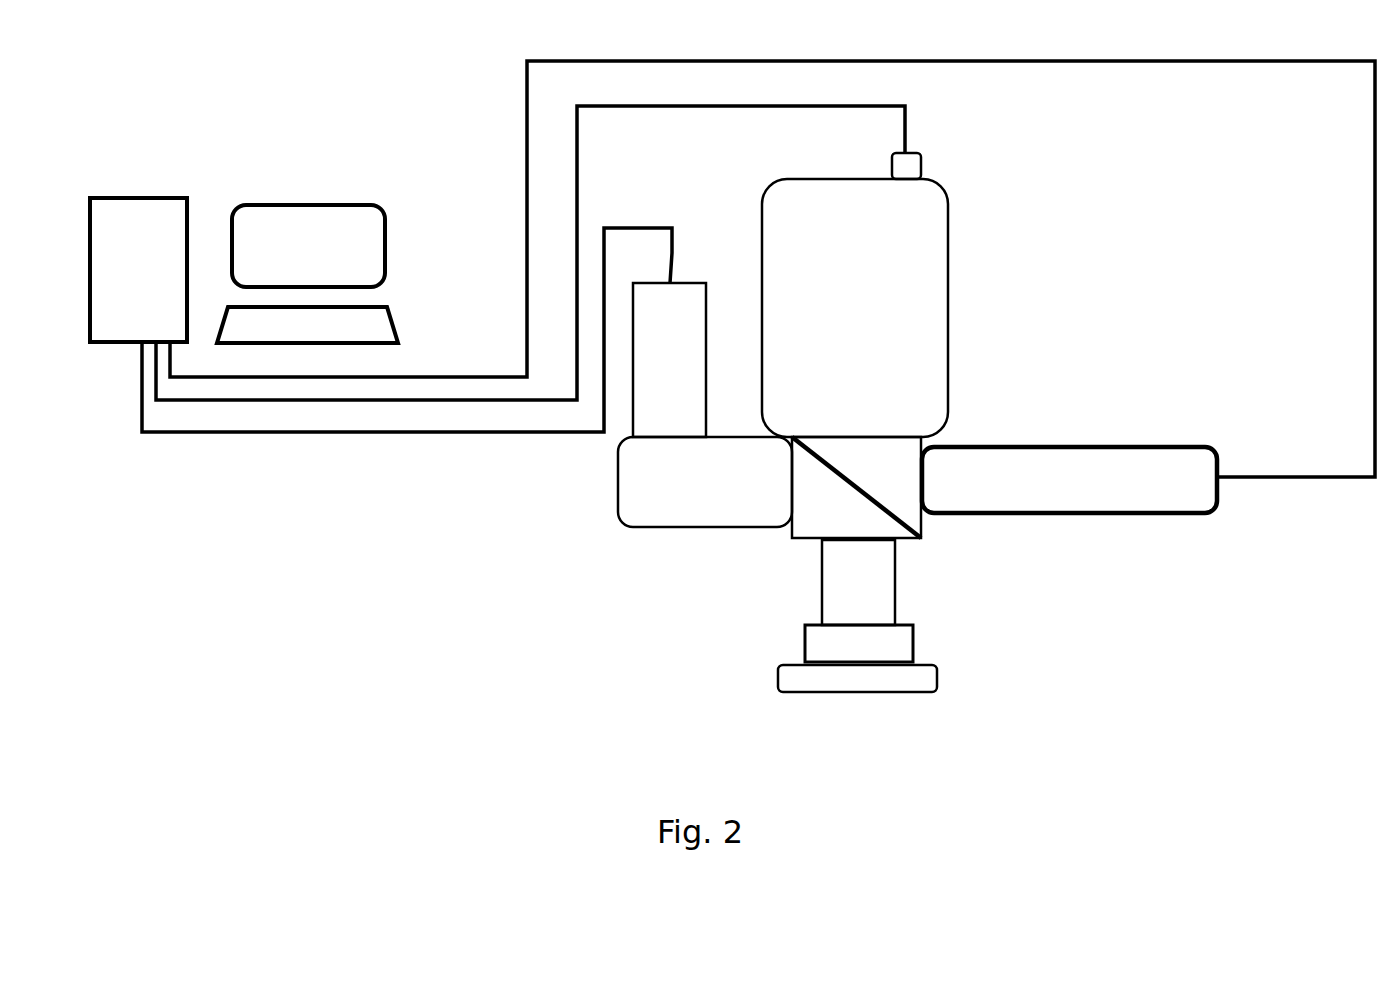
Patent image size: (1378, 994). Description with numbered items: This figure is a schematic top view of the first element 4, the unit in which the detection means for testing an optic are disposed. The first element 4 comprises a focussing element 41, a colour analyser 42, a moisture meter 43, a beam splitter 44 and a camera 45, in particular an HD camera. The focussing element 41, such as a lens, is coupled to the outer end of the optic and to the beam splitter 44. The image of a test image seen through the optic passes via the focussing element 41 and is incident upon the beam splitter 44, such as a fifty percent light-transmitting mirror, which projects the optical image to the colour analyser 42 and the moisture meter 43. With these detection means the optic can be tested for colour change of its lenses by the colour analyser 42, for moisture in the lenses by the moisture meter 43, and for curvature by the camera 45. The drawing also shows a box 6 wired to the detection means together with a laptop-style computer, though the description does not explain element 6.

The first element 4 is at (863, 405).
The control unit 6 is at (135, 225).
The focussing element 41 is at (802, 617).
The colour analyser 42 is at (645, 487).
The moisture meter 43 is at (1148, 498).
The beam splitter 44 is at (863, 518).
The camera 45 is at (894, 220).